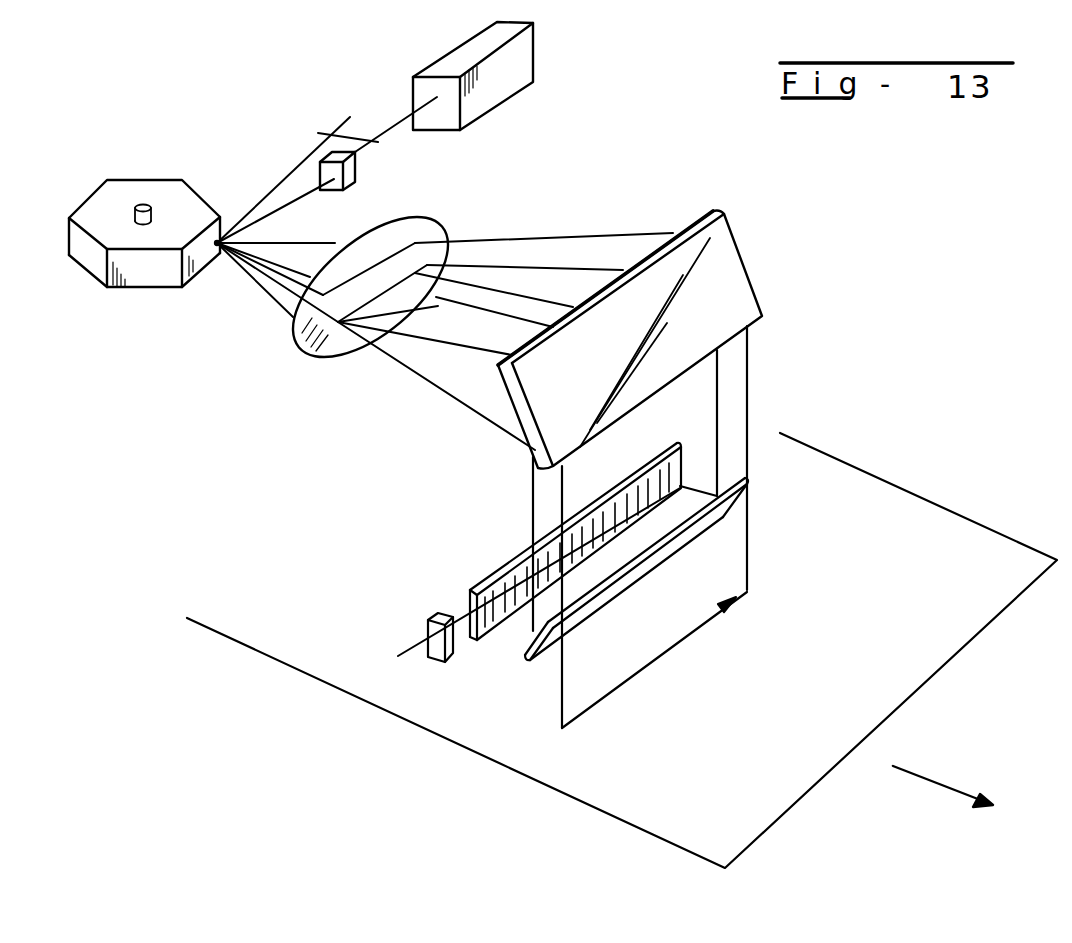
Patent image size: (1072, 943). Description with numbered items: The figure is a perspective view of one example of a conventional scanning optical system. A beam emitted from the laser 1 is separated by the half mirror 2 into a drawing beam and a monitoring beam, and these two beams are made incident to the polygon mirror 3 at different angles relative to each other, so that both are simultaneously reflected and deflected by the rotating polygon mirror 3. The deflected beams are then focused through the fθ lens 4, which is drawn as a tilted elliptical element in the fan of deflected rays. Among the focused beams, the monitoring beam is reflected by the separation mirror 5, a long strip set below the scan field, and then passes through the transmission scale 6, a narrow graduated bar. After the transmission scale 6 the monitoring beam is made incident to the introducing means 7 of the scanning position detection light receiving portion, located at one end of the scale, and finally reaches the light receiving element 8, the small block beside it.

The laser 1 is at (527, 52).
The half mirror 2 is at (378, 142).
The polygon mirror 3 is at (163, 193).
The fθ lens 4 is at (300, 328).
The separation mirror 5 is at (533, 657).
The transmission scale 6 is at (487, 640).
The introducing means 7 is at (465, 600).
The light receiving element 8 is at (420, 648).